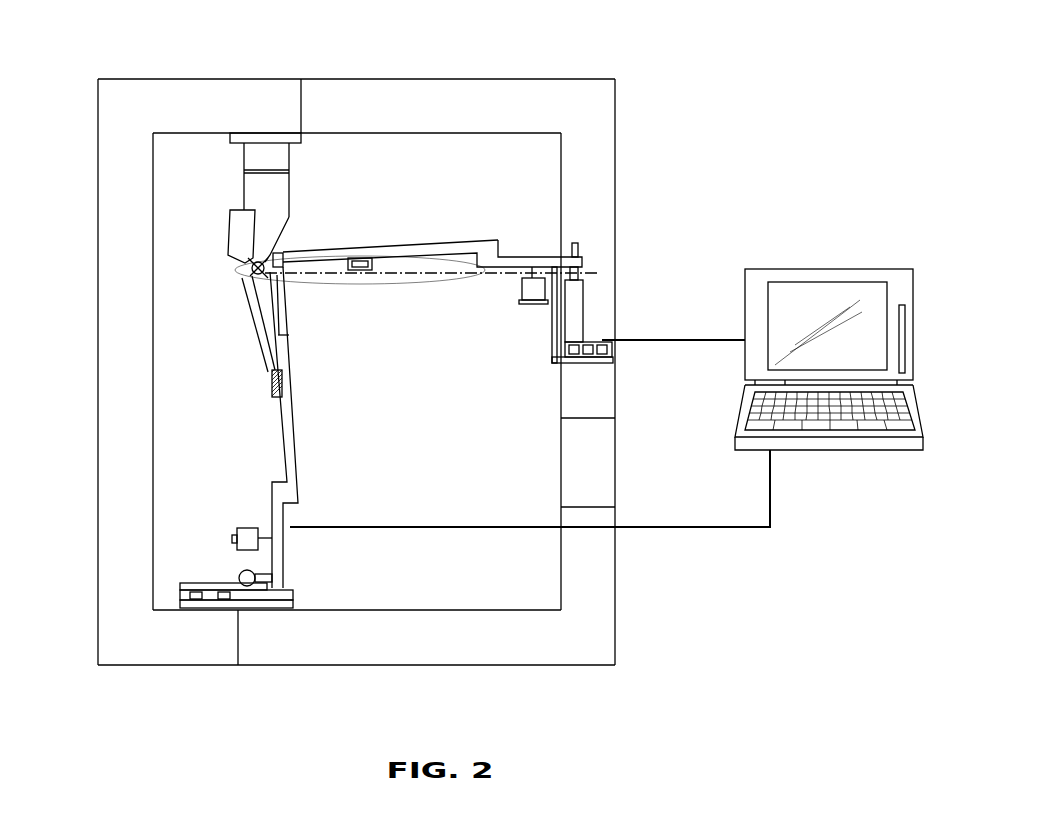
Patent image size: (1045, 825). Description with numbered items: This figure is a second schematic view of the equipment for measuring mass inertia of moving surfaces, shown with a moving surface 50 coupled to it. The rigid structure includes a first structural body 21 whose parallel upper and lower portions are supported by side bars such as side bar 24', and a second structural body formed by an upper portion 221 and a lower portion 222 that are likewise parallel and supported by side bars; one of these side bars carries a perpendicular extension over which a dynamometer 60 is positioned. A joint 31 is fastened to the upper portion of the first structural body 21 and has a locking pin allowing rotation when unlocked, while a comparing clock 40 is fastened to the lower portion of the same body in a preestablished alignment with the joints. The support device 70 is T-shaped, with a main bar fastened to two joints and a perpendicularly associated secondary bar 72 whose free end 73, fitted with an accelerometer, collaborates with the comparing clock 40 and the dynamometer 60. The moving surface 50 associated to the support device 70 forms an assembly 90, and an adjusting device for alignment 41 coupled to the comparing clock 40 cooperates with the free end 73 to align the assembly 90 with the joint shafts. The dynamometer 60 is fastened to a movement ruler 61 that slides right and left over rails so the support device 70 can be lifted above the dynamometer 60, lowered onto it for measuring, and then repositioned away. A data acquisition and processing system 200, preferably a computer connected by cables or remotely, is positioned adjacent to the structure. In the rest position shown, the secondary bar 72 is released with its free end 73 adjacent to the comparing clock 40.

The first structural body 21 is at (275, 107).
The upper portion 221 is at (380, 78).
The lower portion 222 is at (552, 655).
The side bar 24' is at (303, 372).
The joint 31 is at (257, 193).
The comparing clock 40 is at (236, 574).
The adjusting device for alignment 41 is at (283, 600).
The moving surface 50 is at (260, 345).
The dynamometer 60 is at (573, 305).
The movement ruler 61 is at (602, 358).
The support device 70 is at (458, 240).
The secondary bar 72 is at (392, 245).
The free end 73 is at (525, 258).
The assembly 90 is at (291, 390).
The data acquisition and processing system 200 is at (862, 315).